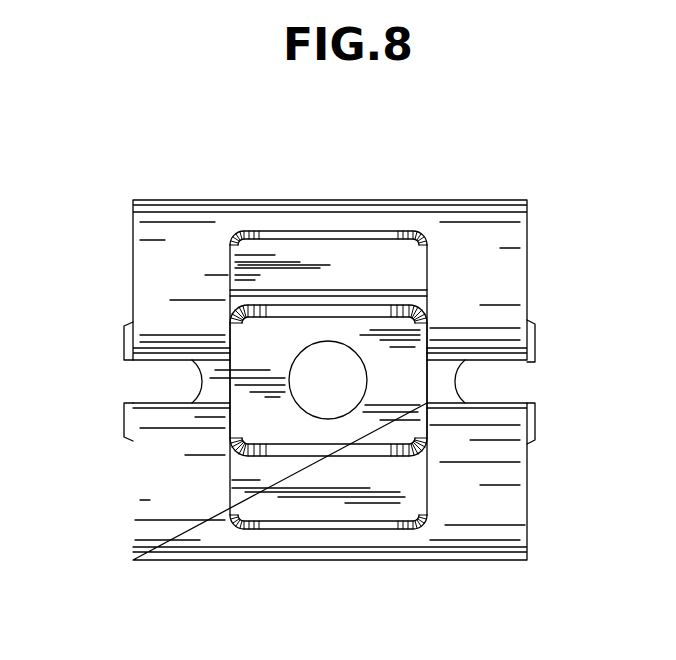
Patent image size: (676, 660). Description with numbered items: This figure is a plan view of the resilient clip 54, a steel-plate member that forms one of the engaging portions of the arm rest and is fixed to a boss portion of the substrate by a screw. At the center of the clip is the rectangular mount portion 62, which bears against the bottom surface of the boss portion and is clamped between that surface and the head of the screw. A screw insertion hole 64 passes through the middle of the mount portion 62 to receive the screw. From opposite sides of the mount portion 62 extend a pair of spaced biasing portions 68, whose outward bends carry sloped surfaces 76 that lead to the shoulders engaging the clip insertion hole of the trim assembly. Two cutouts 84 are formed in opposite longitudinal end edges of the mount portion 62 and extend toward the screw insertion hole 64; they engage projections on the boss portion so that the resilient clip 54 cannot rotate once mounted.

The resilient clip 54 is at (330, 197).
The mount portion 62 is at (393, 433).
The screw insertion hole 64 is at (307, 392).
The biasing portions 68 is at (178, 242).
The sloped surfaces 76 is at (472, 270).
The cutouts 84 is at (196, 380).